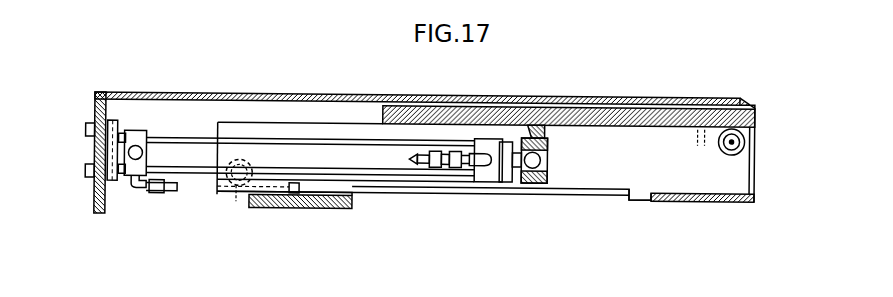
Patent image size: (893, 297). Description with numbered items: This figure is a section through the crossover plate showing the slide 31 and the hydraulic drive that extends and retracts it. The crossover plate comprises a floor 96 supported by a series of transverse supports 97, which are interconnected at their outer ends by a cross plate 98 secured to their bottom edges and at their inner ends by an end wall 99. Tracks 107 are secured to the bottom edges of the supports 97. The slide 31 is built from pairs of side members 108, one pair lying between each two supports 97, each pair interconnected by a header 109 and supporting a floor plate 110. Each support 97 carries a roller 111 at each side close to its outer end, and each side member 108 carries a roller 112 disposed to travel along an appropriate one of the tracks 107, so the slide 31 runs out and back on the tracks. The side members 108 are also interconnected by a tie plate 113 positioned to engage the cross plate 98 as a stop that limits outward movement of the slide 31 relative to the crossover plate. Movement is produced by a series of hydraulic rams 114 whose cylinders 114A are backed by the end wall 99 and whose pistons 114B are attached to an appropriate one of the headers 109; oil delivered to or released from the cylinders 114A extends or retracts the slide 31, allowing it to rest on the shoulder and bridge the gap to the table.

The slide 31 is at (635, 131).
The floor 96 is at (590, 92).
The transverse supports 97 is at (643, 197).
The cross plate 98 is at (700, 197).
The end wall 99 is at (97, 213).
The tracks 107 is at (462, 192).
The side members 108 is at (331, 91).
The header 109 is at (550, 168).
The floor plate 110 is at (517, 92).
The roller 111 is at (742, 145).
The roller 112 is at (237, 201).
The tie plate 113 is at (341, 208).
The hydraulic rams 114 is at (202, 179).
The cylinders 114A is at (205, 92).
The pistons 114B is at (501, 185).